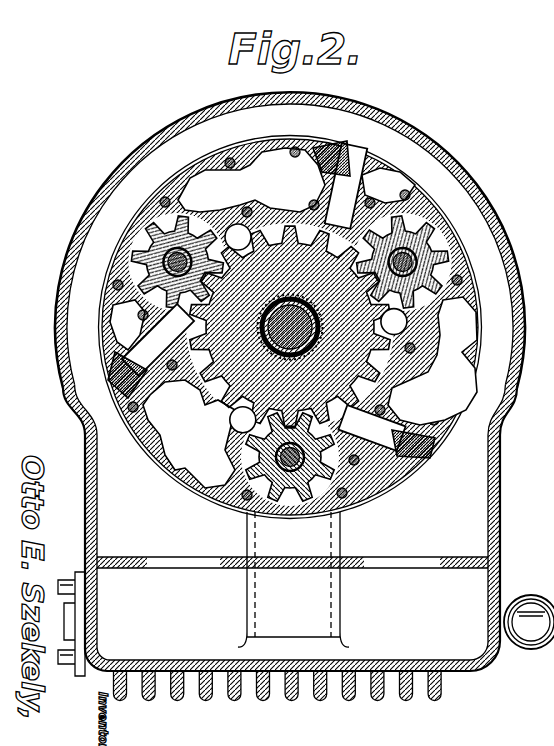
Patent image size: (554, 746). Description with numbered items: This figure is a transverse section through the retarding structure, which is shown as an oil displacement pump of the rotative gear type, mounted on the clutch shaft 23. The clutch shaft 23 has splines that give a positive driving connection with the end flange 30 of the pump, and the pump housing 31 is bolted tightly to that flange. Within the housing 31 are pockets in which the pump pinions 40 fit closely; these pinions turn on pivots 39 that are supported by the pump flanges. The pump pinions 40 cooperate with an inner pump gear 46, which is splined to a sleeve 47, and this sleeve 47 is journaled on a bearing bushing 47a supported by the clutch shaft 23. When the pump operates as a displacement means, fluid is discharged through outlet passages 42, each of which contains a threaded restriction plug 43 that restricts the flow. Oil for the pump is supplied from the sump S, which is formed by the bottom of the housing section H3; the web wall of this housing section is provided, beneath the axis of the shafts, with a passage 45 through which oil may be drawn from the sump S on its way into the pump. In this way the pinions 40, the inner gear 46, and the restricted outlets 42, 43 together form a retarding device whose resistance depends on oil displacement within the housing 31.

The clutch shaft 23 is at (290, 327).
The end flange 30 is at (180, 168).
The pump housing 31 is at (167, 184).
The pivot 39 is at (165, 258).
The pump pinion 40 is at (125, 218).
The outlet passage 42 is at (148, 352).
The threaded restriction plug 43 is at (112, 390).
The passage 45 is at (270, 640).
The inner pump gear 46 is at (390, 373).
The sleeve 47 is at (273, 288).
The bearing bushing 47a is at (174, 421).
The housing section H3 is at (491, 523).
The sump S is at (435, 632).